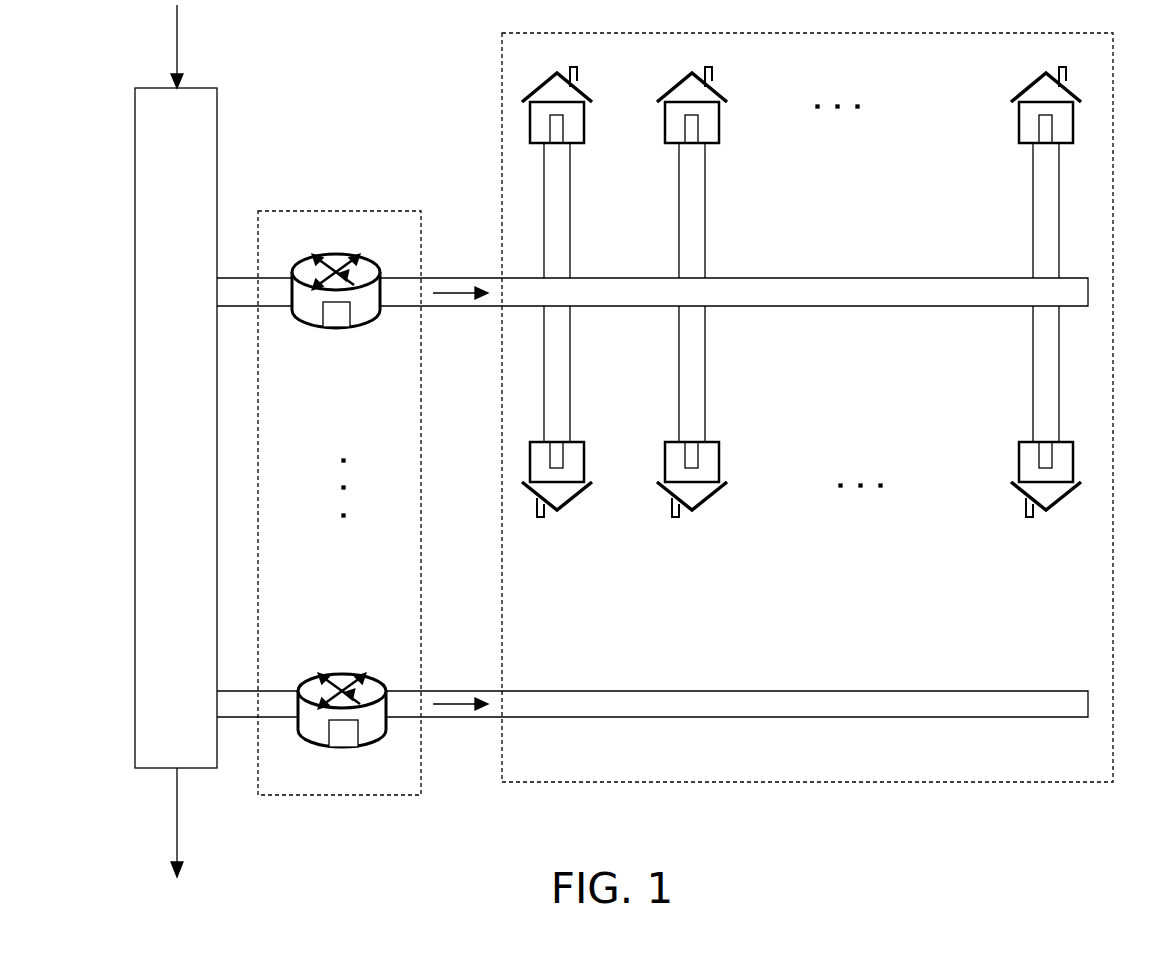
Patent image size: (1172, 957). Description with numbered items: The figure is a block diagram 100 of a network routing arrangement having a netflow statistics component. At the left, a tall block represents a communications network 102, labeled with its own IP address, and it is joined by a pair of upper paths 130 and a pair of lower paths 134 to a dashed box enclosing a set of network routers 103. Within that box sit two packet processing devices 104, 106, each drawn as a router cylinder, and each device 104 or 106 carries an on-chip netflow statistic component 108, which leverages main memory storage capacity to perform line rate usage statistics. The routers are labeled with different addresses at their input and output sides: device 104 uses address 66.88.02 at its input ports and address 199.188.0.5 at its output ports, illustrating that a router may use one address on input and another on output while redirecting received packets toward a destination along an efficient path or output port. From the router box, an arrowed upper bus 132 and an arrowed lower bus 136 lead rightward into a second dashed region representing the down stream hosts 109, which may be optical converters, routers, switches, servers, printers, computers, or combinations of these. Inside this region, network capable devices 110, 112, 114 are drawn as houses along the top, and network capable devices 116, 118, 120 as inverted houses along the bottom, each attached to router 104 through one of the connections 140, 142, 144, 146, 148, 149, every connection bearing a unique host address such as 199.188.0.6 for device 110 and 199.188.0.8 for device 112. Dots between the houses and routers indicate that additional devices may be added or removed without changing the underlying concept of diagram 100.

The block diagram 100 is at (1052, 816).
The communications network 102 is at (217, 148).
The set of network routers 103 is at (422, 740).
The packet processing device 104 is at (360, 263).
The packet processing device 106 is at (333, 672).
The on-chip netflow statistic component 108 is at (339, 318).
The down stream hosts 109 is at (610, 782).
The network capable device 110 is at (583, 122).
The network capable device 112 is at (720, 122).
The network capable device 114 is at (1016, 122).
The network capable device 116 is at (583, 493).
The network capable device 118 is at (720, 493).
The network capable device 120 is at (1018, 477).
The upstream link to first router 130 is at (223, 292).
The first subnet bus 132 is at (452, 277).
The upstream link to second router 134 is at (230, 706).
The second subnet bus 136 is at (543, 690).
The connection 140 is at (573, 232).
The connection 142 is at (708, 232).
The connection 144 is at (1058, 230).
The connection 146 is at (563, 437).
The connection 148 is at (705, 422).
The connection 149 is at (1058, 428).